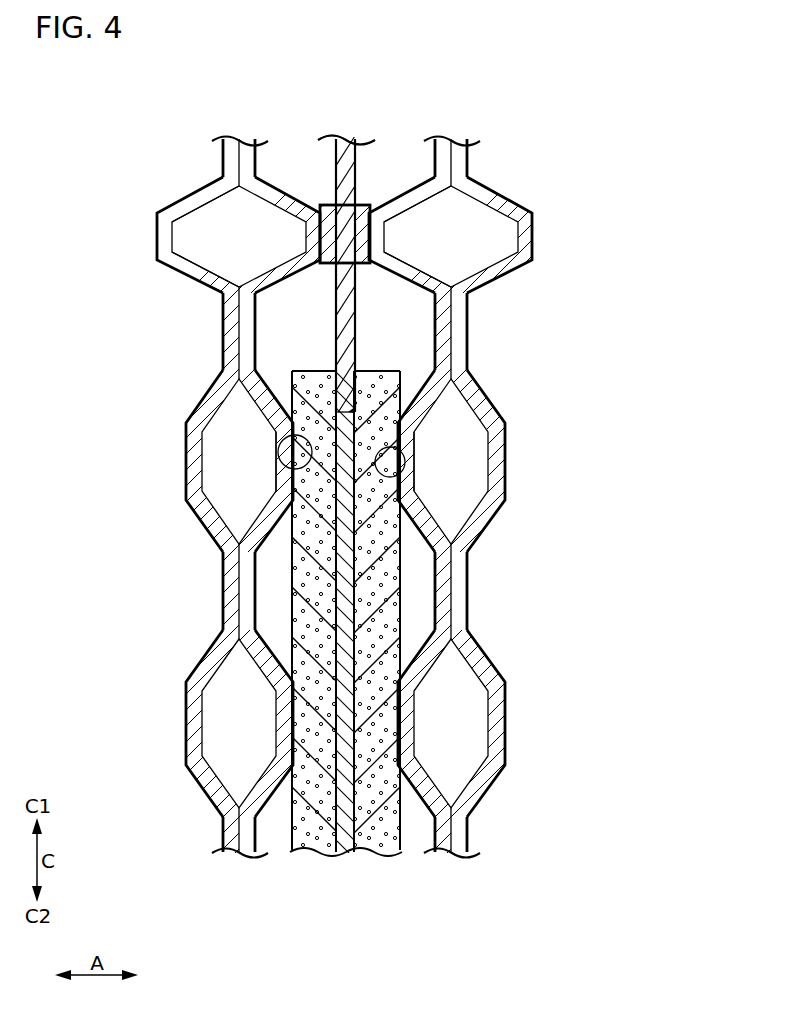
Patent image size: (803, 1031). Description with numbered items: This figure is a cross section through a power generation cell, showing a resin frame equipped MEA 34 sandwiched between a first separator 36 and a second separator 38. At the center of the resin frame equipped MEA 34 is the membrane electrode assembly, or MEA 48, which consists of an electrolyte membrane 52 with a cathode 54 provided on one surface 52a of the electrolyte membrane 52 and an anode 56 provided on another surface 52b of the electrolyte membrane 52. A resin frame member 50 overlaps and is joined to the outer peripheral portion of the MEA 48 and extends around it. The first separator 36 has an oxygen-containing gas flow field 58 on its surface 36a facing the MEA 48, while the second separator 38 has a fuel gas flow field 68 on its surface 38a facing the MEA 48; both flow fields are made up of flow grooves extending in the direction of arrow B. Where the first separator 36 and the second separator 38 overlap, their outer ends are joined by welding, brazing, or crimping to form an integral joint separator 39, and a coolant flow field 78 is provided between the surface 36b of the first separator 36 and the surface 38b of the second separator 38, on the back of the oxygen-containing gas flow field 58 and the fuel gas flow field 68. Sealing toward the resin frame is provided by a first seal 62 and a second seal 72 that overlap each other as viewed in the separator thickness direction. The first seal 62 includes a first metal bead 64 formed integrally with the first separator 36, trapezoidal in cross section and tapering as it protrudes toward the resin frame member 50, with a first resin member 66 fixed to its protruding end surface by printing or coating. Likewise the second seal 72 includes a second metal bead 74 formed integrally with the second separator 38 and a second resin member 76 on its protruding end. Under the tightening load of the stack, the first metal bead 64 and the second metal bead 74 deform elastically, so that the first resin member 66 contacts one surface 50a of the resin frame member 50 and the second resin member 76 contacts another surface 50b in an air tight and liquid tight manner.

The resin frame equipped MEA 34 is at (345, 130).
The resin frame member 50 is at (348, 255).
The one surface of resin frame member 50a is at (354, 316).
The another surface of resin frame member 50b is at (336, 330).
The second seal 72 is at (189, 235).
The second metal bead 74 is at (262, 200).
The second resin member 76 is at (327, 236).
The first seal 62 is at (502, 235).
The first metal bead 64 is at (428, 200).
The first resin member 66 is at (363, 236).
The membrane electrode assembly 48 is at (346, 662).
The electrolyte membrane 52 is at (346, 644).
The one surface of electrolyte membrane 52a is at (354, 629).
The another surface of electrolyte membrane 52b is at (336, 629).
The cathode 54 is at (377, 644).
The anode 56 is at (315, 855).
The first separator 36 is at (228, 843).
The second separator 38 is at (255, 835).
The joint separator 39 is at (346, 515).
The surface of first separator facing the MEA 36a is at (398, 450).
The surface of first separator 36b is at (415, 462).
The surface of second separator facing the MEA 38a is at (290, 440).
The surface of second separator 38b is at (276, 465).
The oxygen-containing gas flow field 58 is at (418, 587).
The fuel gas flow field 68 is at (272, 586).
The coolant flow field 78 is at (462, 725).